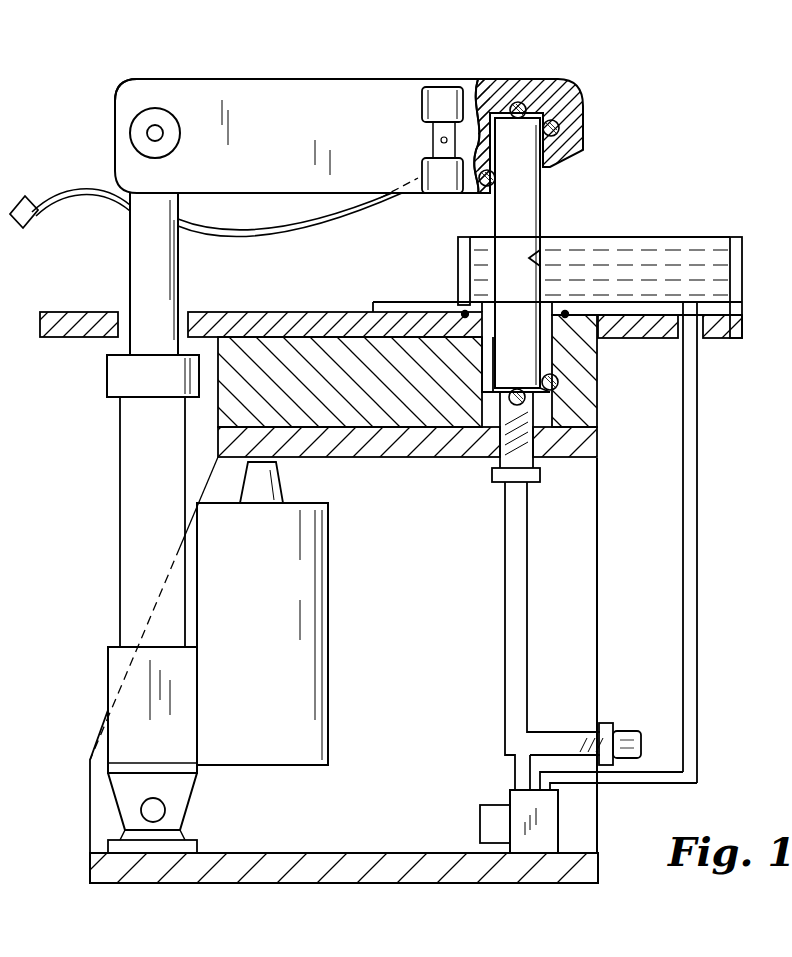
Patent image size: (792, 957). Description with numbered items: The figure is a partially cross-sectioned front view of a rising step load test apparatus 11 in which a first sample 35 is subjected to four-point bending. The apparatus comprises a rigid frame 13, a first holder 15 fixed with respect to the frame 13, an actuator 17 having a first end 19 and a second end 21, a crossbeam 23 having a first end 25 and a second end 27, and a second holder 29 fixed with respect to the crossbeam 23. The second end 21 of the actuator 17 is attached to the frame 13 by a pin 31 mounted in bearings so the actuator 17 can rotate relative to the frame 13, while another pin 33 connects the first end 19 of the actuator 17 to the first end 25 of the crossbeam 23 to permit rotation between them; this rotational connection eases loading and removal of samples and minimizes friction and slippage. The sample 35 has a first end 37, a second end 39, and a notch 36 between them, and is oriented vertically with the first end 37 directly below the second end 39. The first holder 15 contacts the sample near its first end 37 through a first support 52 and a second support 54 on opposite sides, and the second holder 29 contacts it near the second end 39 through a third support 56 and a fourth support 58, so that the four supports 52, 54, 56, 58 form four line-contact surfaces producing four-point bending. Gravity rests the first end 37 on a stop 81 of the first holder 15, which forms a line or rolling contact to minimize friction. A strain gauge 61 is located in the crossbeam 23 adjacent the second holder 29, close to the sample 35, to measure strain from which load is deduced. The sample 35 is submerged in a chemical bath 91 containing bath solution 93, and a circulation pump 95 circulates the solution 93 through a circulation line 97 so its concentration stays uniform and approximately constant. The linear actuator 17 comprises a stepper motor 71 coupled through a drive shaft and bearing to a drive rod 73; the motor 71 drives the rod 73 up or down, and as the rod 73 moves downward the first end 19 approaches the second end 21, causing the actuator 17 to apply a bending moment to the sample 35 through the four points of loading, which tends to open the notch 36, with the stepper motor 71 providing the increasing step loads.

The test apparatus 11 is at (724, 451).
The rigid frame 13 is at (105, 870).
The first holder 15 is at (550, 350).
The actuator 17 is at (114, 610).
The first end of actuator 19 is at (150, 199).
The second end of actuator 21 is at (122, 783).
The crossbeam 23 is at (325, 78).
The first end of crossbeam 25 is at (128, 91).
The second end of crossbeam 27 is at (472, 90).
The second holder 29 is at (565, 80).
The pin 31 is at (142, 812).
The pin 33 is at (147, 133).
The first sample 35 is at (525, 190).
The notch 36 is at (540, 258).
The first end of sample 37 is at (533, 376).
The second end of sample 39 is at (503, 123).
The first support 52 is at (556, 386).
The second support 54 is at (460, 310).
The third support 56 is at (560, 126).
The fourth support 58 is at (480, 186).
The strain gauge 61 is at (440, 97).
The stepper motor 71 is at (262, 613).
The drive rod 73 is at (150, 270).
The stop 81 is at (525, 405).
The chemical bath 91 is at (742, 262).
The bath solution 93 is at (688, 248).
The circulation pump 95 is at (480, 810).
The circulation line 97 is at (690, 566).